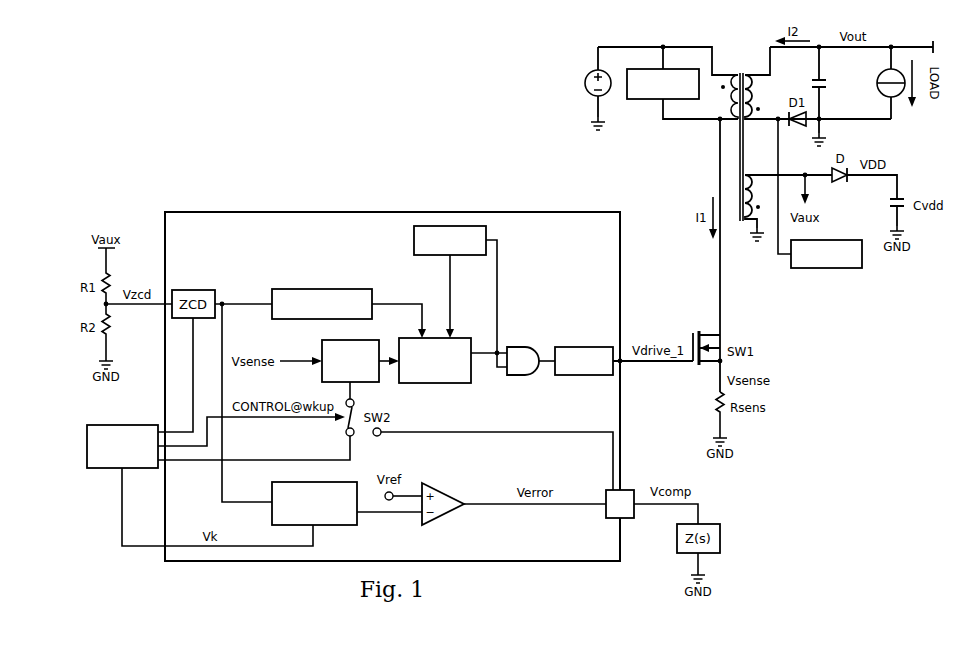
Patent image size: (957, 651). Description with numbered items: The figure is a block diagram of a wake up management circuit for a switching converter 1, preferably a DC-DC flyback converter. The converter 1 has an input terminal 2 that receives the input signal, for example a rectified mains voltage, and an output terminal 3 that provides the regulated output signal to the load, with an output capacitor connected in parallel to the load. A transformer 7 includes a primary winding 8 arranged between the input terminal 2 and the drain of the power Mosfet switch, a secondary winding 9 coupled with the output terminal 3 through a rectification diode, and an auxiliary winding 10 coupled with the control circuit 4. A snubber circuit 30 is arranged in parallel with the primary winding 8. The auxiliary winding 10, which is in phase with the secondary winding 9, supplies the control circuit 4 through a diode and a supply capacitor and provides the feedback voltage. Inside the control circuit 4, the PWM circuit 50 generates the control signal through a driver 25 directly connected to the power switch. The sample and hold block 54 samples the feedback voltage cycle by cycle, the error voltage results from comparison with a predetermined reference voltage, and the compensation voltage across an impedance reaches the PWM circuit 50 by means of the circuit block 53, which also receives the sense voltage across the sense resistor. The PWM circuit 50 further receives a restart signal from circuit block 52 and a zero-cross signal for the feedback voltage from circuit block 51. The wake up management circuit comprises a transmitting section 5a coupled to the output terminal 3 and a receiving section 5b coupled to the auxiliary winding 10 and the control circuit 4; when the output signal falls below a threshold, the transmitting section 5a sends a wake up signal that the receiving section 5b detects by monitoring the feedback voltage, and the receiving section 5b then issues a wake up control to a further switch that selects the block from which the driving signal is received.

The switching converter 1 is at (564, 46).
The input terminal 2 is at (666, 45).
The output terminal 3 is at (816, 53).
The control circuit 4 is at (630, 454).
The transmitting section 5a is at (828, 269).
The receiving section 5b is at (111, 471).
The transformer 7 is at (745, 50).
The primary winding 8 is at (736, 74).
The secondary winding 9 is at (748, 74).
The auxiliary winding 10 is at (748, 173).
The driver 25 is at (582, 378).
The snubber circuit 30 is at (661, 101).
The PWM circuit 50 is at (437, 386).
The circuit block 51 is at (321, 289).
The circuit block 52 is at (412, 236).
The circuit block 53 is at (320, 376).
The sample and hold block 54 is at (270, 511).